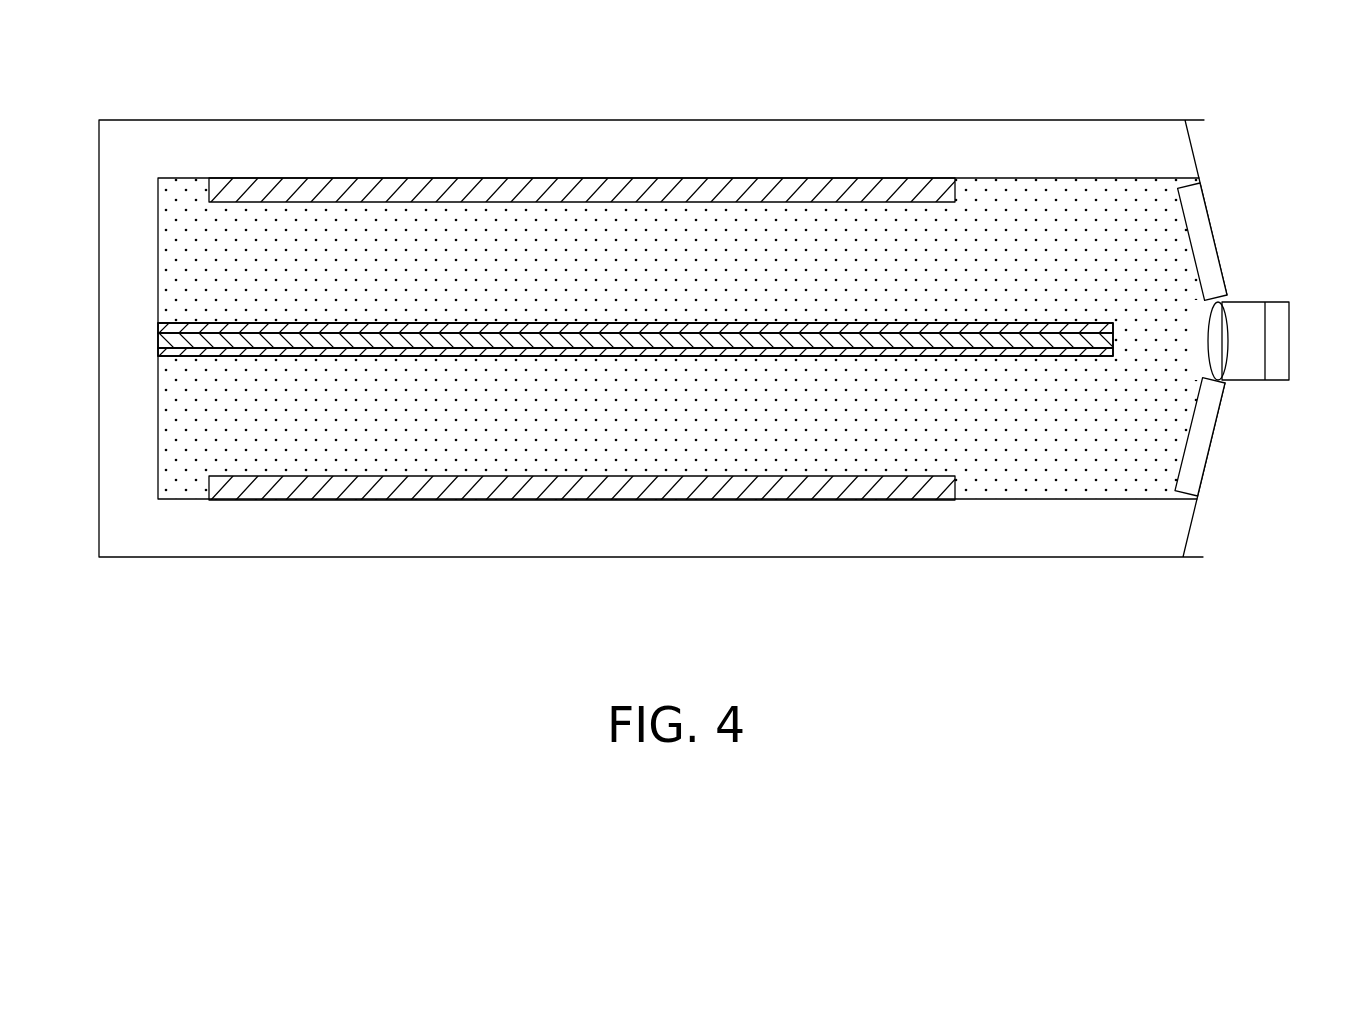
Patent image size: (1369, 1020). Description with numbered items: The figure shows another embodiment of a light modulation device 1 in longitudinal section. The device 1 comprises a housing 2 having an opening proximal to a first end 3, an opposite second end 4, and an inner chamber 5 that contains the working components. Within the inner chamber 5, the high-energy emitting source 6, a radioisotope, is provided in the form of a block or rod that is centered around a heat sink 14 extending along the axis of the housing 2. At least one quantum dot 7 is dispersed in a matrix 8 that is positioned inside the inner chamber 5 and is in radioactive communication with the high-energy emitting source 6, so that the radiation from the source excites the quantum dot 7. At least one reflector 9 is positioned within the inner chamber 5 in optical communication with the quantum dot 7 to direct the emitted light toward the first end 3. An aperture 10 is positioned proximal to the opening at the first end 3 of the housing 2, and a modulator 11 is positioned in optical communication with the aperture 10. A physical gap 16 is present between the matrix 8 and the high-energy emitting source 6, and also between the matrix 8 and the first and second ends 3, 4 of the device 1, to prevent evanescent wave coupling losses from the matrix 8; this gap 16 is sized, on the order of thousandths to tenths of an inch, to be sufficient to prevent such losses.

The light modulation device 1 is at (847, 93).
The housing 2 is at (283, 118).
The first end 3 is at (1281, 338).
The second end 4 is at (85, 145).
The inner chamber 5 is at (1112, 205).
The high-energy emitting source 6 is at (495, 331).
The quantum dot 7 is at (895, 218).
The matrix 8 is at (620, 460).
The reflector 9 is at (780, 490).
The aperture 10 is at (1222, 313).
The modulator 11 is at (1259, 383).
The heat sink 14 is at (338, 340).
The physical gap 16 is at (1183, 310).